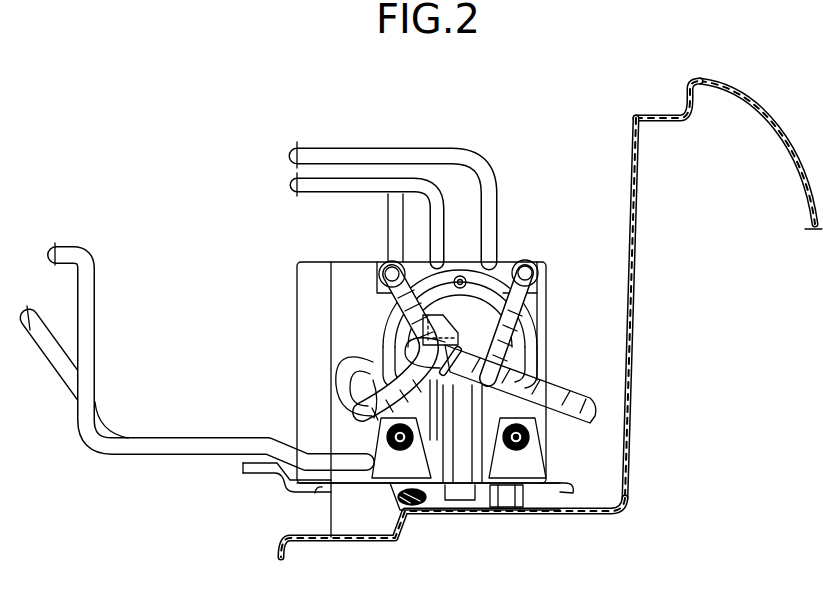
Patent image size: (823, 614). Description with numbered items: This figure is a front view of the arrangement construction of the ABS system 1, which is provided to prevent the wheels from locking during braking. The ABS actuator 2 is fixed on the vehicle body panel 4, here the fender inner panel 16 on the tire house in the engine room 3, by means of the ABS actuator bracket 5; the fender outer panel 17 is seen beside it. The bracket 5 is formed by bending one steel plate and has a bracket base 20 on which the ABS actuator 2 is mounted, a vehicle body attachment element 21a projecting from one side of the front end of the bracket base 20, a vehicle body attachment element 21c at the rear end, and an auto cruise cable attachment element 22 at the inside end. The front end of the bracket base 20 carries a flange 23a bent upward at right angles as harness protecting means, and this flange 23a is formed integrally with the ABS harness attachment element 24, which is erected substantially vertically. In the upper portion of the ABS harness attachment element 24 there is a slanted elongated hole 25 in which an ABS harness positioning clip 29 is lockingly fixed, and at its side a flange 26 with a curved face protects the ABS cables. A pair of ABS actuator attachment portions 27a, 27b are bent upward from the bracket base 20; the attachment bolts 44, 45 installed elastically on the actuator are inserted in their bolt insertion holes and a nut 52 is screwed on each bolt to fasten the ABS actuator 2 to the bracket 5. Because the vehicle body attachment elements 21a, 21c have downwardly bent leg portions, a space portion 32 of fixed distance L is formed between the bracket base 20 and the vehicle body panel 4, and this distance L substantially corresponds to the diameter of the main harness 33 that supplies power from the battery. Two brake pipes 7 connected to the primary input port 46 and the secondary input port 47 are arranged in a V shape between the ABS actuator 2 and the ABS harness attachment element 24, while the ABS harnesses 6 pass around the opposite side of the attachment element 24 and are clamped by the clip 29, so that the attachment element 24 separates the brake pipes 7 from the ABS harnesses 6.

The ABS system 1 is at (399, 131).
The ABS actuator 2 is at (538, 328).
The engine room 3 is at (175, 231).
The vehicle body panel 4 is at (607, 514).
The ABS actuator bracket 5 is at (578, 485).
The ABS harness 6 is at (543, 382).
The brake pipe 7 is at (428, 262).
The fender inner panel 16 is at (633, 283).
The fender outer panel 17 is at (788, 141).
The bracket base 20 is at (553, 483).
The vehicle body attachment element 21a is at (543, 493).
The vehicle body attachment element 21c is at (343, 517).
The auto cruise cable attachment element 22 is at (250, 462).
The flange 23a is at (330, 503).
The ABS harness attachment element 24 is at (345, 365).
The elongated hole 25 is at (460, 345).
The flange 26 is at (462, 330).
The ABS actuator attachment portion 27a is at (388, 465).
The ABS actuator attachment portion 27b is at (527, 470).
The ABS harness positioning clip 29 is at (300, 276).
The space portion 32 is at (483, 498).
The main harness 33 is at (413, 505).
The attachment bolt 44 is at (346, 425).
The attachment bolt 45 is at (560, 392).
The primary input port 46 is at (395, 283).
The secondary input port 47 is at (530, 270).
The nut 52 is at (362, 432).
The distance L is at (458, 495).